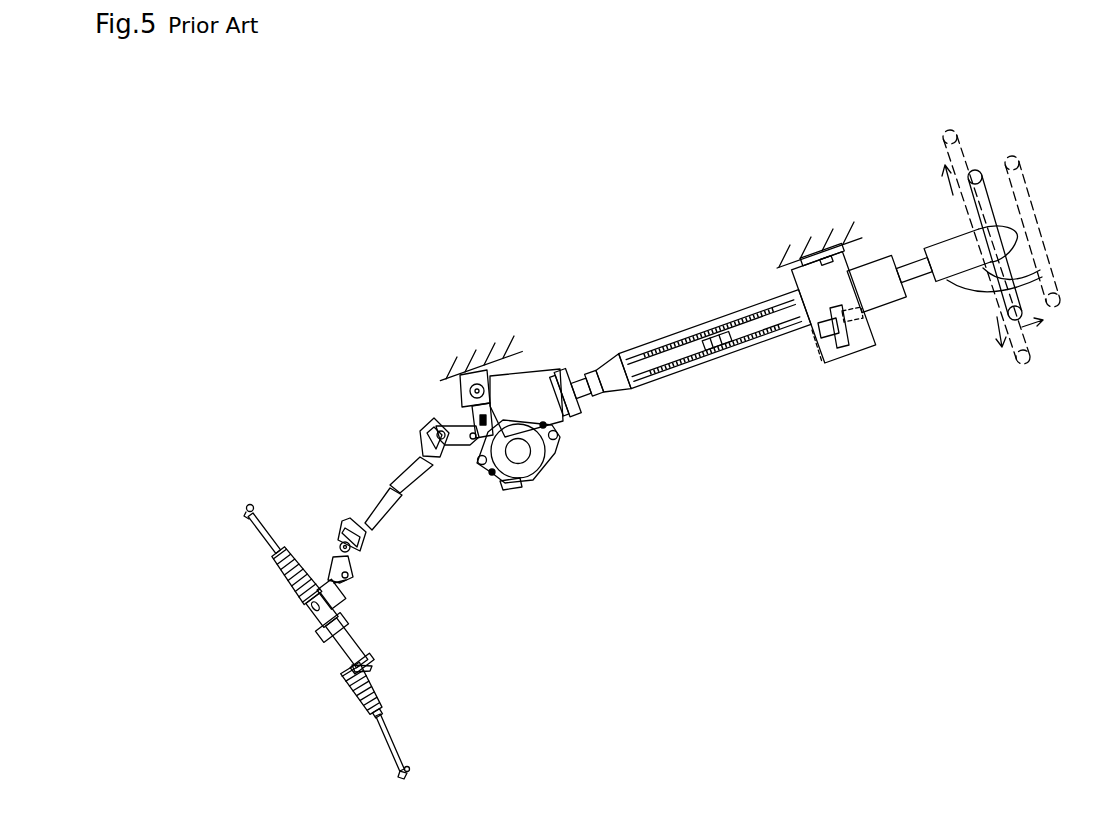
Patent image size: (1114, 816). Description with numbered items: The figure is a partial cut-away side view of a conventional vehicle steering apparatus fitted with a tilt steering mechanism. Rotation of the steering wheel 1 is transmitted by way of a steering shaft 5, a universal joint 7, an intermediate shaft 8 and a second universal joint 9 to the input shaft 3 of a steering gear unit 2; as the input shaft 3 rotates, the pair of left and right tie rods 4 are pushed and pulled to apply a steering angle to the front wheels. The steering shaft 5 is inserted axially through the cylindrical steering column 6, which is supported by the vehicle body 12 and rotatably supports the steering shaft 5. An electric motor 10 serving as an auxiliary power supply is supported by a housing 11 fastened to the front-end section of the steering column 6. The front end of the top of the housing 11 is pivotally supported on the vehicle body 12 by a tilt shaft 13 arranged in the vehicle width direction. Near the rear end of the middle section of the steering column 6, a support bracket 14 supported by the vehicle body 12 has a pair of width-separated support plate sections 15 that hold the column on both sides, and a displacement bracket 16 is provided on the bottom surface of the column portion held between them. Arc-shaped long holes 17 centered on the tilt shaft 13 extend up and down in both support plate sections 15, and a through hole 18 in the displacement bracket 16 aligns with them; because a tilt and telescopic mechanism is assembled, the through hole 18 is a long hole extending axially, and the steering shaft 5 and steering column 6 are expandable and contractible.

The steering wheel 1 is at (1032, 230).
The steering gear unit 2 is at (301, 634).
The input shaft 3 is at (327, 562).
The tie rods 4 is at (263, 537).
The steering shaft 5 is at (905, 283).
The steering column 6 is at (878, 305).
The universal joint 7 is at (426, 423).
The intermediate shaft 8 is at (422, 465).
The universal joint 9 is at (343, 525).
The electric motor 10 is at (527, 452).
The housing 11 is at (522, 410).
The vehicle body 12 is at (795, 257).
The tilt shaft 13 is at (467, 370).
The support bracket 14 is at (795, 282).
The support plate sections 15 is at (823, 353).
The displacement bracket 16 is at (863, 352).
The long holes 17 is at (828, 352).
The through hole 18 is at (827, 310).